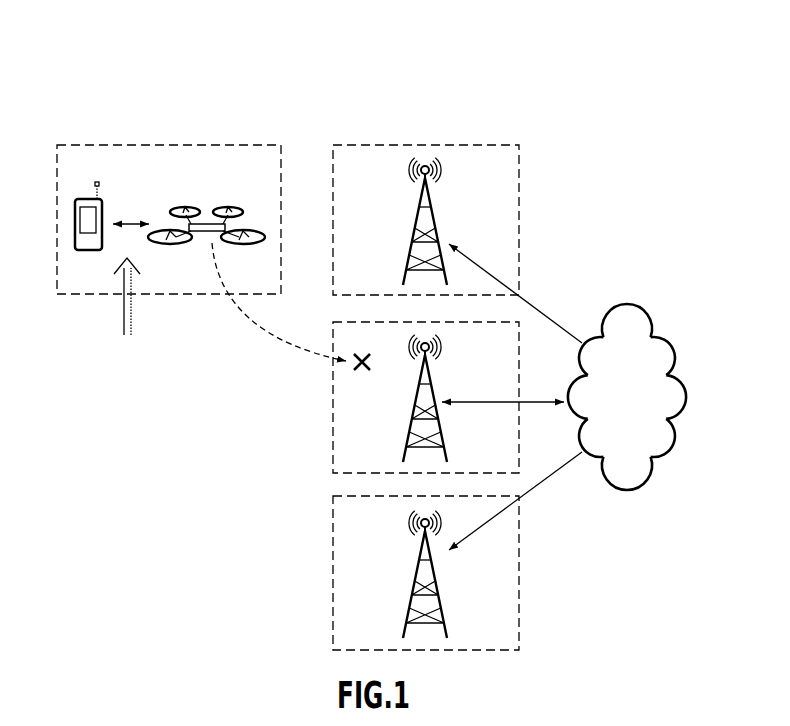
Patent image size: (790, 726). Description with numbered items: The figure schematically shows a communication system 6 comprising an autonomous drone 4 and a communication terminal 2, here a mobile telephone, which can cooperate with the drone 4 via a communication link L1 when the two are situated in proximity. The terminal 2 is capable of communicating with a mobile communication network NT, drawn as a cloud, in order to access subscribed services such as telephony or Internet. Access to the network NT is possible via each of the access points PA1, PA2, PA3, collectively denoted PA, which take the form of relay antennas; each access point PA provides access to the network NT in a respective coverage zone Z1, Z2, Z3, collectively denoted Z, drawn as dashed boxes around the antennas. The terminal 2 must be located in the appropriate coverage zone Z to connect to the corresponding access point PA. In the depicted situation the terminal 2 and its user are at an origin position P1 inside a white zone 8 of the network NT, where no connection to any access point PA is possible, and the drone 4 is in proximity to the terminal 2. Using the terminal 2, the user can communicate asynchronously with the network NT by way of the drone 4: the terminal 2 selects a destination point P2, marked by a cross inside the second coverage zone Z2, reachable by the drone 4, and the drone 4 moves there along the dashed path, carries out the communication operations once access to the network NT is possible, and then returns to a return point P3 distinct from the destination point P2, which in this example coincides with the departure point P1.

The communication terminal 2 is at (93, 233).
The autonomous drone 4 is at (198, 232).
The communication system 6 is at (206, 221).
The white zone 8 is at (79, 168).
The communication link L1 is at (132, 222).
The origin position P1 is at (130, 310).
The return point P3 is at (130, 310).
The destination point P2 is at (366, 368).
The coverage zone Z is at (398, 397).
The first coverage zone Z1 is at (357, 168).
The second coverage zone Z2 is at (357, 345).
The third coverage zone Z3 is at (357, 519).
The access point PA is at (423, 574).
The first access point PA1 is at (446, 219).
The second access point PA2 is at (454, 452).
The third access point PA3 is at (451, 613).
The mobile communication network NT is at (639, 408).